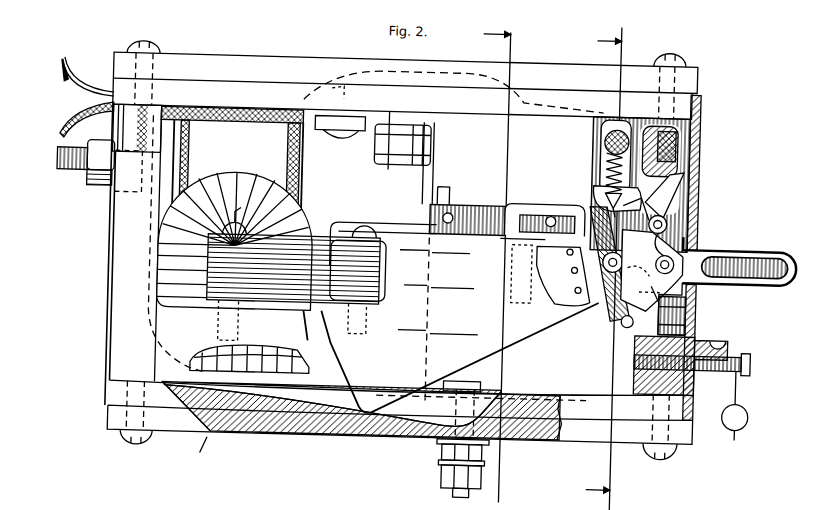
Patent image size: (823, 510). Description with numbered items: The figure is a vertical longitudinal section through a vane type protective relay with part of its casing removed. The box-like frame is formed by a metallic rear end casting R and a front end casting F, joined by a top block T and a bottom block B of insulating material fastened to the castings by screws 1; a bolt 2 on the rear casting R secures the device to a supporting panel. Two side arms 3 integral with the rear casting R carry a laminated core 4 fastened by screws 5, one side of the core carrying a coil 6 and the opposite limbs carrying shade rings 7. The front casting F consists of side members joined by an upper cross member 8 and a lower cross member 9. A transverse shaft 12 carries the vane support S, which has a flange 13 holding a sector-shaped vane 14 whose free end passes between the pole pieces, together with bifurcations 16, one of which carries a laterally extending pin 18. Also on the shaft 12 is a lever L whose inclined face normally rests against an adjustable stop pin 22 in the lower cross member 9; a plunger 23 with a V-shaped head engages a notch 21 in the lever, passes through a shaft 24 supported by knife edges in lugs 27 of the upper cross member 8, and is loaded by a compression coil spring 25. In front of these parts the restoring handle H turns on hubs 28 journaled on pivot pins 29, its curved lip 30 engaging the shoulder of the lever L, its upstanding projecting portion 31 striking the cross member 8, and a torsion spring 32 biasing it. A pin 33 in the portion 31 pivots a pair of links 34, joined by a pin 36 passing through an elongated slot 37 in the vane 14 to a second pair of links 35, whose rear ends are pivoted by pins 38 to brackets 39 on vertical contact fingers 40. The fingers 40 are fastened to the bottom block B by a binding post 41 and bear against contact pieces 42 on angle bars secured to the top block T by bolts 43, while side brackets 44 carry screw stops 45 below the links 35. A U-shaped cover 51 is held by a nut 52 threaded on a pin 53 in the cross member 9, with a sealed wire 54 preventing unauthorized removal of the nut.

The screws 1 is at (146, 50).
The bolt 2 is at (64, 180).
The side arms 3 is at (322, 356).
The core 4 is at (318, 240).
The screws 5 is at (232, 232).
The coil 6 is at (250, 182).
The shade rings 7 is at (386, 268).
The upper cross member 8 is at (668, 150).
The lower cross member 9 is at (690, 322).
The transverse shaft 12 is at (620, 254).
The flange 13 is at (572, 300).
The vane 14 is at (483, 314).
The bifurcations 16 is at (651, 293).
The pin 18 is at (629, 322).
The V-shaped notch 21 is at (606, 200).
The adjustable stop pin 22 is at (688, 296).
The plunger 23 is at (604, 166).
The shaft 24 is at (602, 136).
The compression coil spring 25 is at (604, 186).
The lugs 27 is at (598, 152).
The hubs 28 is at (667, 218).
The pivot pins 29 is at (638, 275).
The lip 30 is at (643, 296).
The upstanding projecting portion 31 is at (682, 190).
The torsion spring 32 is at (674, 255).
The pin 33 is at (636, 207).
The links 34 is at (555, 212).
The links 35 is at (490, 204).
The pin 36 is at (545, 205).
The elongated slot 37 is at (520, 234).
The pins 38 is at (450, 212).
The brackets 39 is at (441, 190).
The contact fingers 40 is at (430, 226).
The binding post 41 is at (452, 458).
The contact pieces 42 is at (395, 143).
The bolts 43 is at (340, 80).
The side brackets 44 is at (556, 280).
The screw stops 45 is at (522, 274).
The cover 51 is at (698, 100).
The nut 52 is at (698, 378).
The pin 53 is at (637, 356).
The wire 54 is at (742, 385).
The bottom block B is at (378, 438).
The front end casting F is at (697, 168).
The restoring handle H is at (756, 243).
The lever L is at (625, 310).
The rear end casting R is at (109, 290).
The vane support S is at (602, 300).
The top block T is at (287, 62).